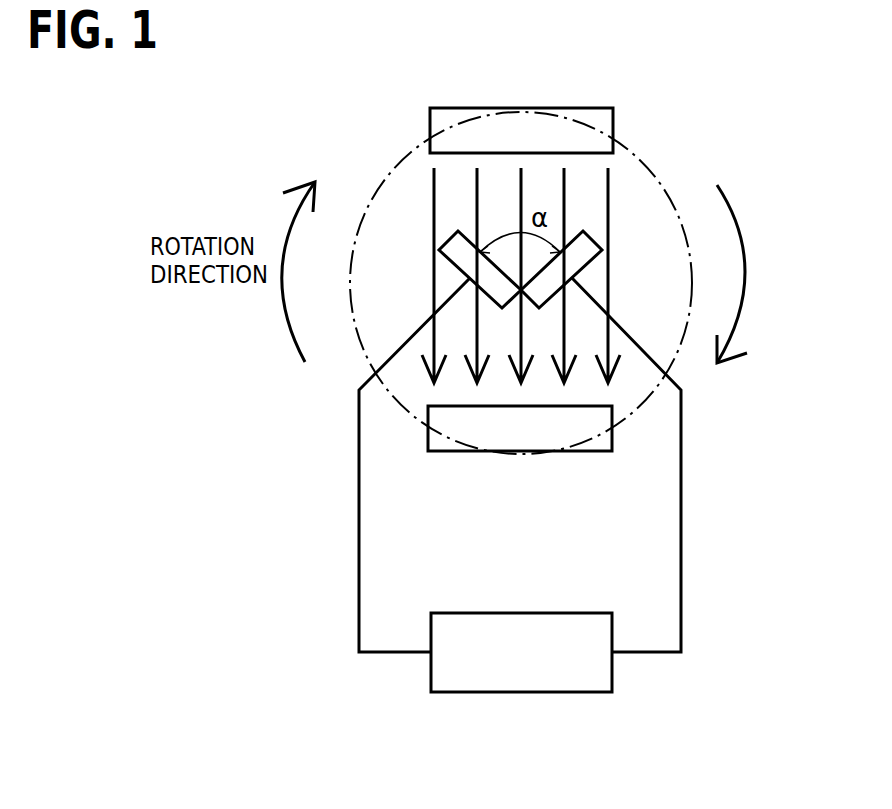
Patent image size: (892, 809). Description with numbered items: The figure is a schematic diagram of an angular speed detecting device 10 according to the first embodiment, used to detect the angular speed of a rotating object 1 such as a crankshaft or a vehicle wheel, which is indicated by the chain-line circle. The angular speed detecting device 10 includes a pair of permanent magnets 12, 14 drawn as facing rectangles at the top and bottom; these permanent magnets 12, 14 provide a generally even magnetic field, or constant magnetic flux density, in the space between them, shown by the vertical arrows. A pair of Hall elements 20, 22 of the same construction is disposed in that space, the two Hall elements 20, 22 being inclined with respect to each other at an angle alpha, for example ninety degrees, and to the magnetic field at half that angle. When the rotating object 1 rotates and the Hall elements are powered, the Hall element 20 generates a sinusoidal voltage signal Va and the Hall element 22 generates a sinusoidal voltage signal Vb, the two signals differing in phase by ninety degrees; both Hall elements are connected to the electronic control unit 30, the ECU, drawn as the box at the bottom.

The rotating object 1 is at (642, 155).
The angular speed detecting device 10 is at (635, 103).
The permanent magnet 12 is at (508, 107).
The permanent magnet 14 is at (522, 452).
The Hall element 20 is at (457, 230).
The Hall element 22 is at (584, 232).
The electronic control unit 30 is at (539, 692).